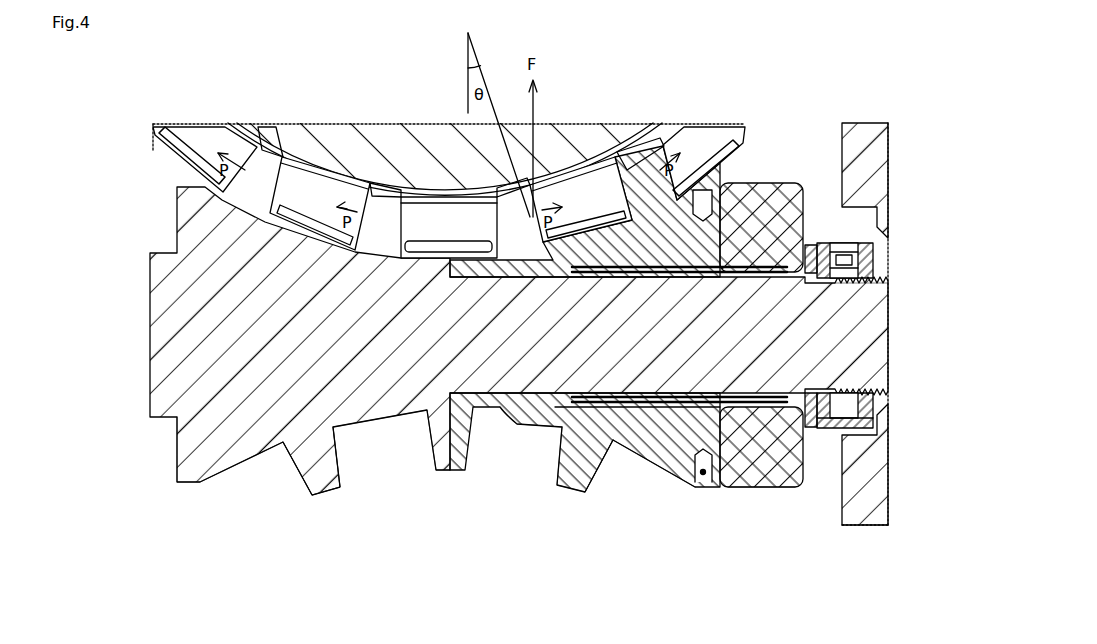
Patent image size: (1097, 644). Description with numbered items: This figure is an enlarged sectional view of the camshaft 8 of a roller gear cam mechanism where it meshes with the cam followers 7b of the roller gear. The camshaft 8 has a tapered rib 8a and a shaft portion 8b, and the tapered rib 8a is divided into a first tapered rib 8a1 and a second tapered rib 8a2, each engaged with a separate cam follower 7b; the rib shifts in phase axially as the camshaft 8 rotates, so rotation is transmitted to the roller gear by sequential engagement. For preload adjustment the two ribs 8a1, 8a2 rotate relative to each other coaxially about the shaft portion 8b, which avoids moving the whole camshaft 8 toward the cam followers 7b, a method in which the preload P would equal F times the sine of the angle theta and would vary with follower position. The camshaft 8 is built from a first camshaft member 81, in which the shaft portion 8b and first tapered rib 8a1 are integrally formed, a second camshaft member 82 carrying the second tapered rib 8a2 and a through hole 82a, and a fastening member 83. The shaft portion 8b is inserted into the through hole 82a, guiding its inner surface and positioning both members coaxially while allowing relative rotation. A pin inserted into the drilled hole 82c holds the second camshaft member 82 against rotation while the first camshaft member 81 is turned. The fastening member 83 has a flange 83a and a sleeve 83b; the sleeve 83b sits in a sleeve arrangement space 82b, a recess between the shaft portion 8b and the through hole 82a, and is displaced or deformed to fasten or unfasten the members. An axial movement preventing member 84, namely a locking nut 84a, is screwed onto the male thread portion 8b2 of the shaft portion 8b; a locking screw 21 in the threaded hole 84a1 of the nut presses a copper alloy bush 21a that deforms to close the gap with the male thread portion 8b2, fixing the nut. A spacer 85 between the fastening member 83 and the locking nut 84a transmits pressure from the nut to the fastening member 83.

The cam follower 7b is at (207, 154).
The camshaft 8 is at (140, 312).
The tapered rib 8a is at (451, 505).
The first tapered rib 8a1 is at (328, 483).
The second tapered rib 8a2 is at (570, 486).
The shaft portion 8b is at (535, 339).
The male thread portion 8b2 is at (868, 281).
The locking screw 21 is at (843, 240).
The copper alloy bush 21a is at (850, 270).
The first camshaft member 81 is at (277, 497).
The second camshaft member 82 is at (541, 487).
The through hole 82a is at (501, 403).
The sleeve arrangement space 82b is at (688, 410).
The drilled hole 82c is at (703, 476).
The fastening member 83 is at (748, 500).
The flange 83a is at (777, 488).
The sleeve 83b is at (630, 412).
The axial movement preventing member 84 is at (896, 324).
The locking nut 84a is at (868, 405).
The threaded hole 84a1 is at (874, 253).
The spacer 85 is at (810, 420).